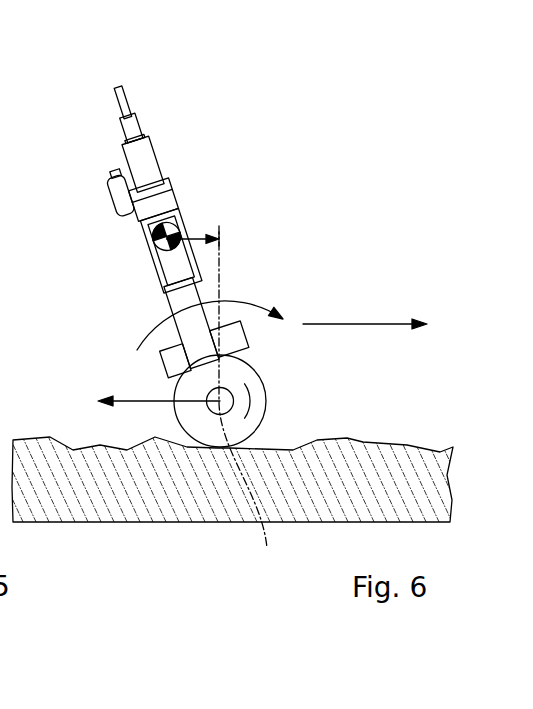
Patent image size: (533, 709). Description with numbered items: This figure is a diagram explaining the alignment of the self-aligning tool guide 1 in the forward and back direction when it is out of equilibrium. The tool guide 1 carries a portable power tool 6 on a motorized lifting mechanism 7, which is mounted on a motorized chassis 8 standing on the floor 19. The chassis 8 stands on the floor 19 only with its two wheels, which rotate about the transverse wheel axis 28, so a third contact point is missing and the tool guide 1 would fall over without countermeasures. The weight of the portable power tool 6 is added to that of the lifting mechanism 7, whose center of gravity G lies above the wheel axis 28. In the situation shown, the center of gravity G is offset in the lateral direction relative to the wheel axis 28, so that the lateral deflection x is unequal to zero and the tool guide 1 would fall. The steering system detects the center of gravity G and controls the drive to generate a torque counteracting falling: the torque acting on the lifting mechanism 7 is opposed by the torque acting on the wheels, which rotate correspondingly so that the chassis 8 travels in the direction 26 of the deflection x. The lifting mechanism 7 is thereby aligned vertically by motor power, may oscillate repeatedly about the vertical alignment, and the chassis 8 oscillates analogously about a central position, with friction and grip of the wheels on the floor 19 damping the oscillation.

The self-aligning tool guide 1 is at (72, 84).
The portable power tool 6 is at (153, 177).
The center of gravity G is at (150, 237).
The motorized lifting mechanism 7 is at (175, 282).
The motorized chassis 8 is at (185, 388).
The lateral deflection x is at (186, 232).
The wheel axis 28 is at (250, 405).
The direction of travel 26 is at (362, 320).
The floor 19 is at (357, 440).